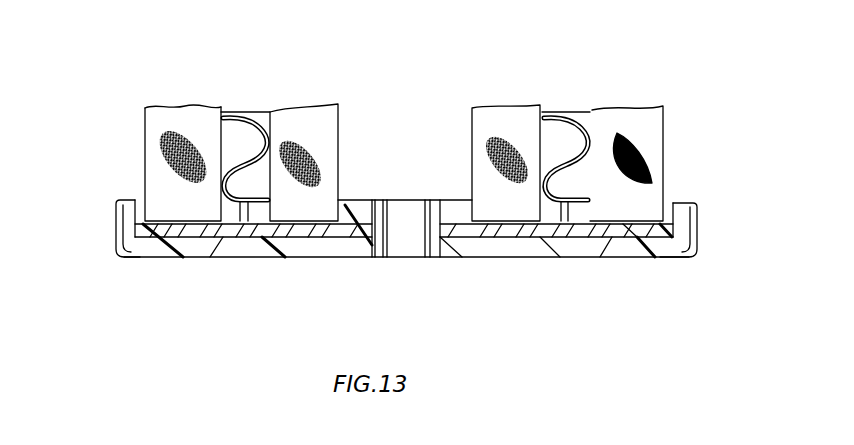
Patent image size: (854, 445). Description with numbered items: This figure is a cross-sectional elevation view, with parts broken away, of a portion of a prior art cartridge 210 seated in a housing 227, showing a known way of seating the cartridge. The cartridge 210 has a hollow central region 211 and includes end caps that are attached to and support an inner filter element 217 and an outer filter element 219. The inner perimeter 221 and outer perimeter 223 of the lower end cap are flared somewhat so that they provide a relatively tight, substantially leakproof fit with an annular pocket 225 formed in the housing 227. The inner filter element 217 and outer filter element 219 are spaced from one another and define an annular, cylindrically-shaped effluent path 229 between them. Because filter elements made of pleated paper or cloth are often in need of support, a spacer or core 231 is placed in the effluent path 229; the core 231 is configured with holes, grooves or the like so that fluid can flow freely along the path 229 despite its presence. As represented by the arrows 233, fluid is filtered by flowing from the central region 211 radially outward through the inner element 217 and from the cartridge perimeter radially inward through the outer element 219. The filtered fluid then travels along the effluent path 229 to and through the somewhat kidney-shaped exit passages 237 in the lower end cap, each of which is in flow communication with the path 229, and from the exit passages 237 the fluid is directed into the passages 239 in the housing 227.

The cartridge 210 is at (150, 91).
The hollow central region 211 is at (395, 138).
The inner filter element 217 is at (299, 108).
The outer filter element 219 is at (186, 108).
The inner perimeter 221 is at (338, 250).
The outer perimeter 223 is at (158, 255).
The annular pocket 225 is at (140, 198).
The housing 227 is at (353, 258).
The effluent path 229 is at (243, 110).
The core 231 is at (258, 110).
The arrows 233 is at (100, 150).
The exit passages 237 is at (567, 243).
The passages 239 is at (243, 257).